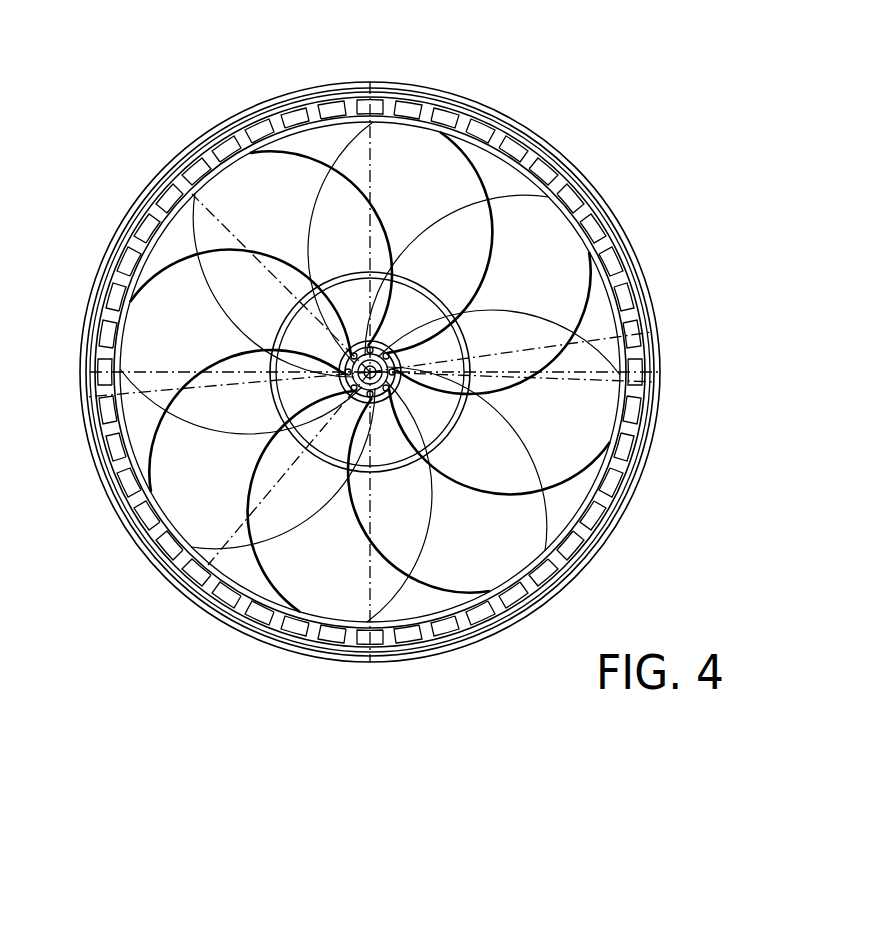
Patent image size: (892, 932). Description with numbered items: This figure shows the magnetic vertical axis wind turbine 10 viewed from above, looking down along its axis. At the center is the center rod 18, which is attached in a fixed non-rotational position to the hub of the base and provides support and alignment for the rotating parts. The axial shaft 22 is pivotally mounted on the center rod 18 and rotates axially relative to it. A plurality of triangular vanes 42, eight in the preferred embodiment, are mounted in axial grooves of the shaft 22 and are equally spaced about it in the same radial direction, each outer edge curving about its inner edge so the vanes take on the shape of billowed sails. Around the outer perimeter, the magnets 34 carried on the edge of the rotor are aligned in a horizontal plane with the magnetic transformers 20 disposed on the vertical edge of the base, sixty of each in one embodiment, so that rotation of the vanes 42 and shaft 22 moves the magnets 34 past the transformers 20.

The magnetic vertical axis wind turbine 10 is at (224, 671).
The center rod 18 is at (385, 365).
The magnetic transformers 20 is at (608, 535).
The axial shaft 22 is at (382, 364).
The magnets 34 is at (632, 490).
The vanes 42 is at (635, 290).